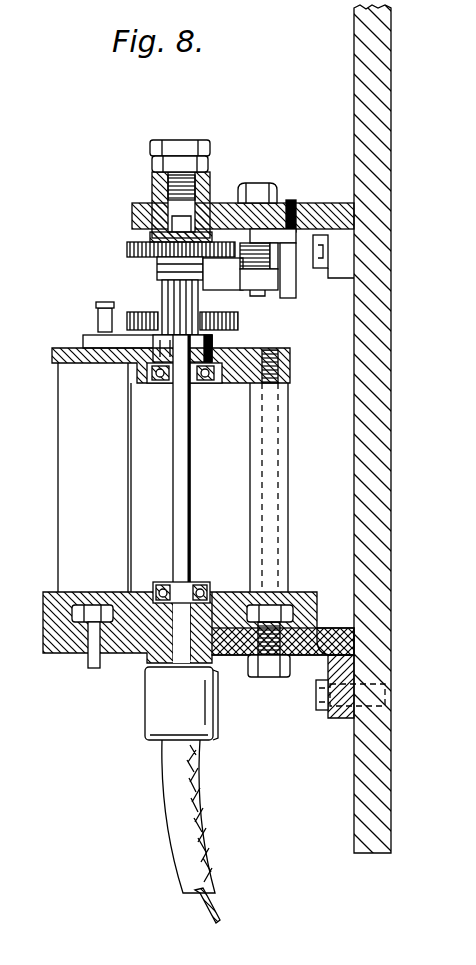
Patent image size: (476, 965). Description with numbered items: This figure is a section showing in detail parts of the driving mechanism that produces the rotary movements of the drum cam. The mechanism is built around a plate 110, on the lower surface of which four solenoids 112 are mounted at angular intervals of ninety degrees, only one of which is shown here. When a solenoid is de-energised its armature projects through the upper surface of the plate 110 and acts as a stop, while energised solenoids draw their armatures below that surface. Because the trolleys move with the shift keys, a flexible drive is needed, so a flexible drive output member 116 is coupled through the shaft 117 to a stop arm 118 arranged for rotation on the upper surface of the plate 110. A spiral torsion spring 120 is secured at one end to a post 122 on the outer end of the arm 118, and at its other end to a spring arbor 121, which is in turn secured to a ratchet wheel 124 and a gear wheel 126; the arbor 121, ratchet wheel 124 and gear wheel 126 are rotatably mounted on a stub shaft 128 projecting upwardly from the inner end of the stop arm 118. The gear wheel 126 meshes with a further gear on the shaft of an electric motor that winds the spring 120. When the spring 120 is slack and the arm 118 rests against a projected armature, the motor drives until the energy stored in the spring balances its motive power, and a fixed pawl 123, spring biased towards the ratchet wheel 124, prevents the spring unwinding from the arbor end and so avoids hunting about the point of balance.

The plate 110 is at (262, 353).
The solenoid 112 is at (70, 470).
The flexible drive output member 116 is at (169, 803).
The shaft 117 is at (180, 470).
The stop arm 118 is at (95, 336).
The spiral torsion spring 120 is at (236, 326).
The spring arbor 121 is at (242, 312).
The post 122 is at (98, 304).
The fixed pawl 123 is at (218, 270).
The ratchet wheel 124 is at (157, 275).
The gear wheel 126 is at (127, 250).
The stub shaft 128 is at (162, 299).